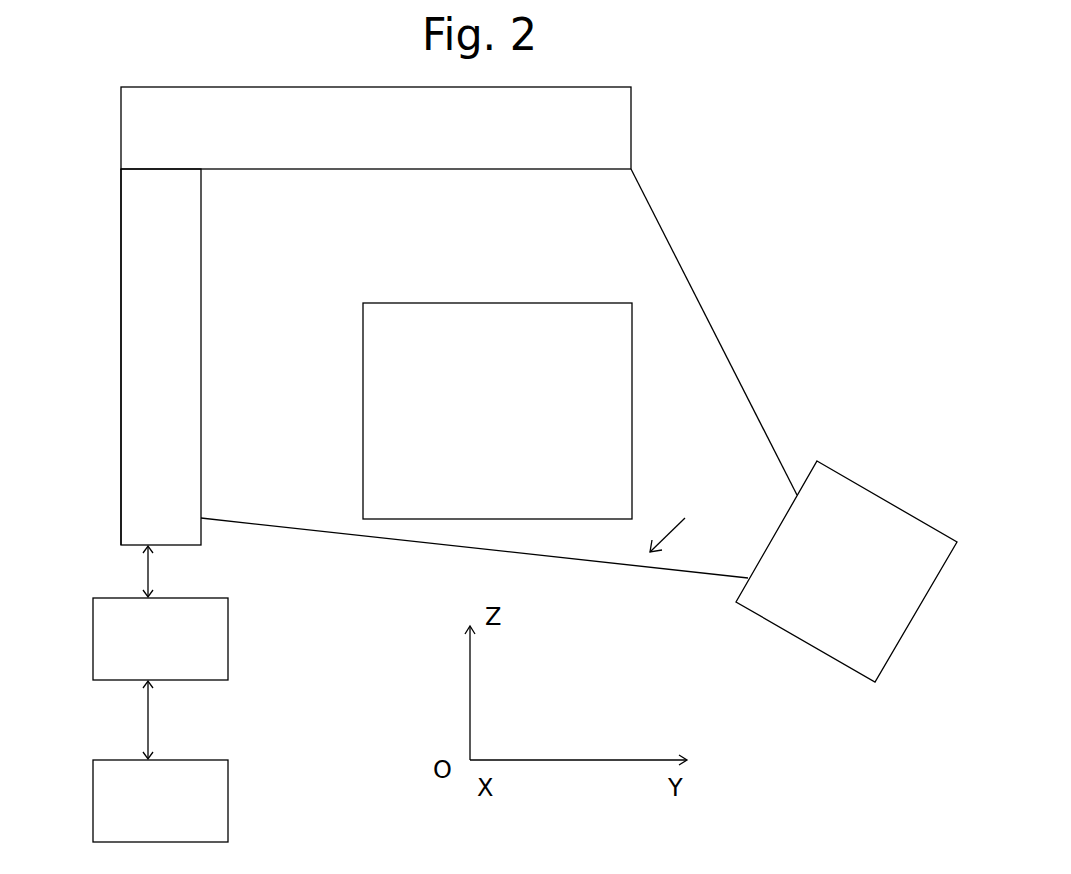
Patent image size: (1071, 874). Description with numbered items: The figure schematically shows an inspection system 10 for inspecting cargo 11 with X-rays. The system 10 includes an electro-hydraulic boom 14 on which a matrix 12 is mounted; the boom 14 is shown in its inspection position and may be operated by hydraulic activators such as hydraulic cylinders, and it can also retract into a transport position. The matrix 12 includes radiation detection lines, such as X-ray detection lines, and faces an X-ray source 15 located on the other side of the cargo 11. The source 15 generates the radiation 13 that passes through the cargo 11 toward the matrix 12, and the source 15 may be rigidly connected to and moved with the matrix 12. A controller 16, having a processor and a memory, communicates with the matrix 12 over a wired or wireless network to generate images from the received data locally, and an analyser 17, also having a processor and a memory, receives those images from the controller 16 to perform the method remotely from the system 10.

The inspection system 10 is at (733, 255).
The cargo 11 is at (511, 422).
The matrix 12 is at (272, 170).
The radiation 13 is at (404, 241).
The boom 14 is at (121, 192).
The X-ray source 15 is at (820, 653).
The controller 16 is at (228, 640).
The analyser 17 is at (228, 793).